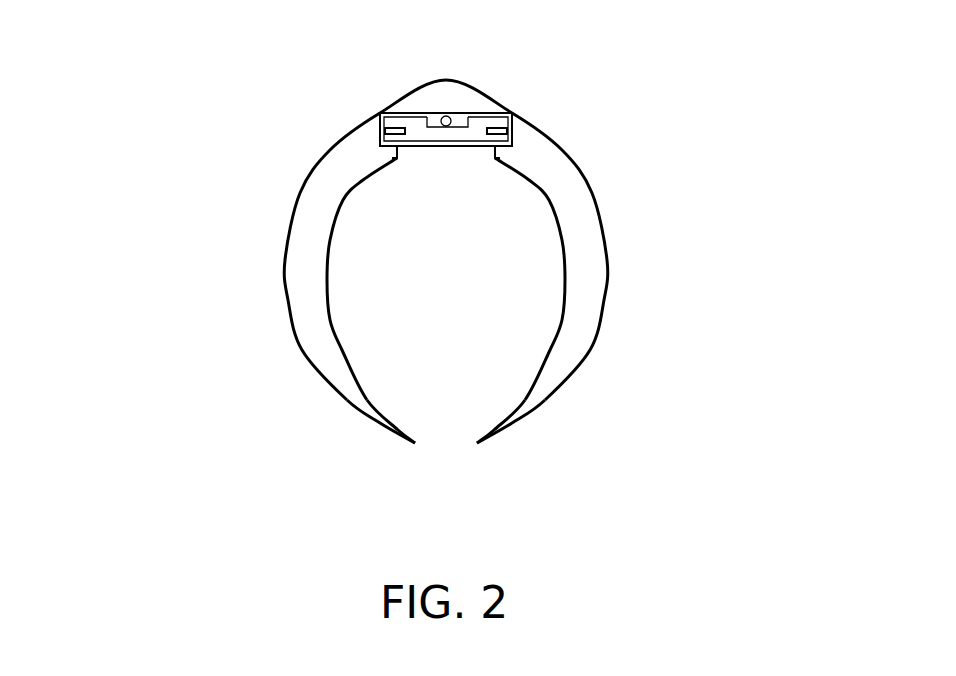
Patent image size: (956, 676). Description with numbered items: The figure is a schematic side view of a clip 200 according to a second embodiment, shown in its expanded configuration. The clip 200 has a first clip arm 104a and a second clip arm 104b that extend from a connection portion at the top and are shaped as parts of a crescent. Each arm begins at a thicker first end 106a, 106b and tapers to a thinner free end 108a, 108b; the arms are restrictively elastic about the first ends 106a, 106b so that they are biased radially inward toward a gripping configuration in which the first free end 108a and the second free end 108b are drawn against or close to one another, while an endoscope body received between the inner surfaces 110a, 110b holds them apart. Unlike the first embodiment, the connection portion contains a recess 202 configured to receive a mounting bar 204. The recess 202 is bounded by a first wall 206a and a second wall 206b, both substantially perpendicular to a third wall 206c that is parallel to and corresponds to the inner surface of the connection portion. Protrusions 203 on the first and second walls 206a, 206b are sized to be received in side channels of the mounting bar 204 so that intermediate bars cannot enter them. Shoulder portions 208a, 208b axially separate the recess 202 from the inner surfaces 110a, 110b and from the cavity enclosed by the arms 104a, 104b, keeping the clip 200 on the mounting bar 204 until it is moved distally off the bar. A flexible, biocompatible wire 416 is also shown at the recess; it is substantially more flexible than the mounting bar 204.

The clip 200 is at (137, 170).
The first clip arm 104a is at (303, 282).
The second clip arm 104b is at (588, 266).
The first end 106a is at (365, 113).
The first end 106b is at (517, 116).
The first free end 108a is at (413, 446).
The second free end 108b is at (473, 446).
The inner surface 110a is at (328, 277).
The inner surface 110b is at (562, 297).
The recess 202 is at (379, 116).
The protrusions 203 is at (512, 78).
The mounting bar 204 is at (480, 130).
The first wall 206a is at (385, 133).
The second wall 206b is at (512, 132).
The third wall 206c is at (415, 115).
The shoulder portion 208a is at (393, 153).
The shoulder portion 208b is at (495, 152).
The wire 416 is at (446, 117).